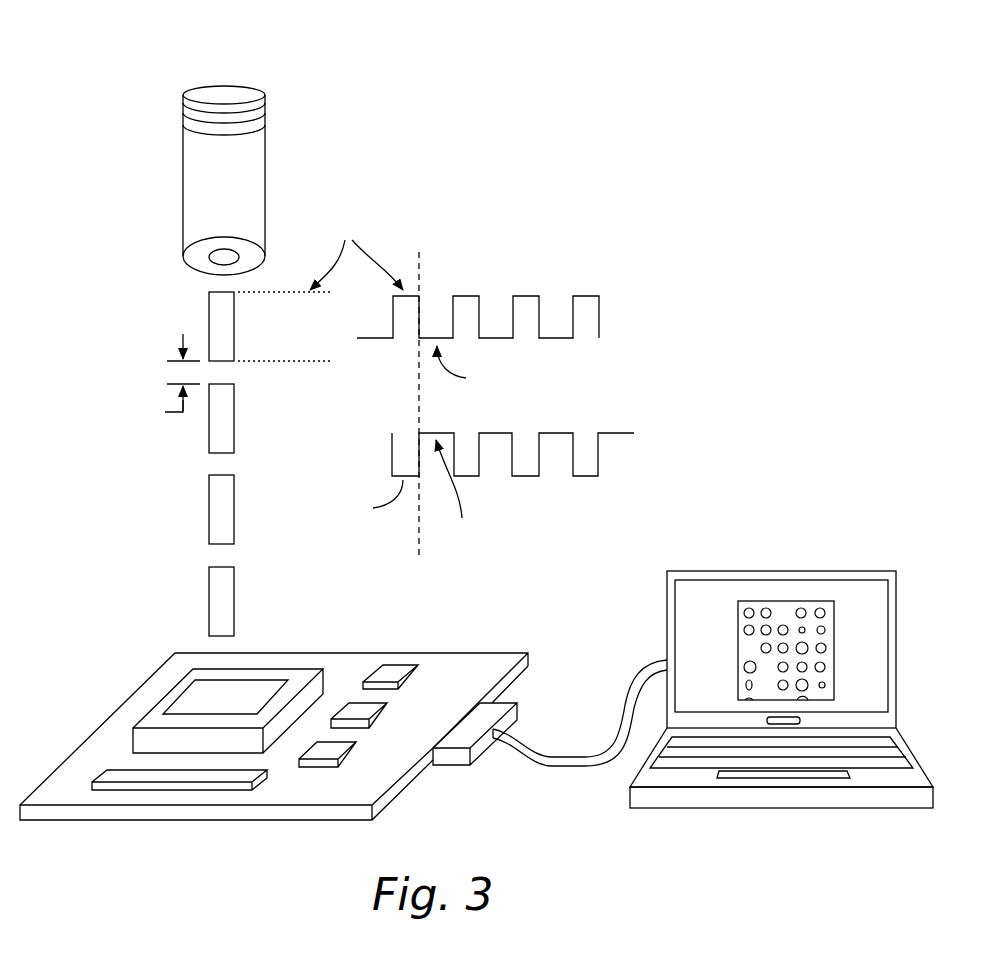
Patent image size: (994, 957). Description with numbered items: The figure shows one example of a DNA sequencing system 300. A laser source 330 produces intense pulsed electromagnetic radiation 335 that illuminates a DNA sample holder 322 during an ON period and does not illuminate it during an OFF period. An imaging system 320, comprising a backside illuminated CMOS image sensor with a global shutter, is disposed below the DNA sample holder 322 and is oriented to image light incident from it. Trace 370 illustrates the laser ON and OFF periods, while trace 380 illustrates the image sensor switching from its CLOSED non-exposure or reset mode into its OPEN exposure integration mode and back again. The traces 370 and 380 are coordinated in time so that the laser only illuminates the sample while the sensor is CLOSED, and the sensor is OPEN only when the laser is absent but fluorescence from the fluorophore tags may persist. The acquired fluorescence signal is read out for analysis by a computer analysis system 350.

The DNA sequencing system 300 is at (86, 35).
The laser source 330 is at (183, 181).
The pulsed electromagnetic radiation 335 is at (221, 320).
The trace 370 is at (636, 313).
The trace 380 is at (636, 461).
The imaging system 320 is at (186, 681).
The DNA sample holder 322 is at (213, 690).
The computer analysis system 350 is at (853, 571).